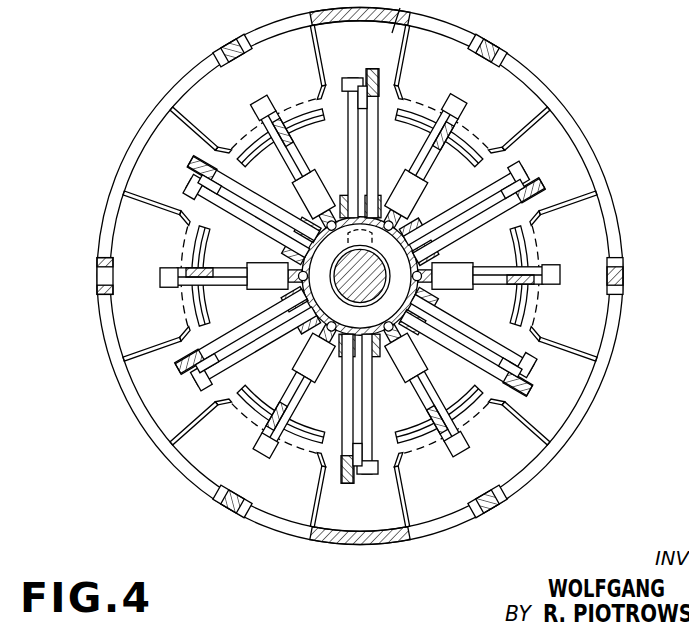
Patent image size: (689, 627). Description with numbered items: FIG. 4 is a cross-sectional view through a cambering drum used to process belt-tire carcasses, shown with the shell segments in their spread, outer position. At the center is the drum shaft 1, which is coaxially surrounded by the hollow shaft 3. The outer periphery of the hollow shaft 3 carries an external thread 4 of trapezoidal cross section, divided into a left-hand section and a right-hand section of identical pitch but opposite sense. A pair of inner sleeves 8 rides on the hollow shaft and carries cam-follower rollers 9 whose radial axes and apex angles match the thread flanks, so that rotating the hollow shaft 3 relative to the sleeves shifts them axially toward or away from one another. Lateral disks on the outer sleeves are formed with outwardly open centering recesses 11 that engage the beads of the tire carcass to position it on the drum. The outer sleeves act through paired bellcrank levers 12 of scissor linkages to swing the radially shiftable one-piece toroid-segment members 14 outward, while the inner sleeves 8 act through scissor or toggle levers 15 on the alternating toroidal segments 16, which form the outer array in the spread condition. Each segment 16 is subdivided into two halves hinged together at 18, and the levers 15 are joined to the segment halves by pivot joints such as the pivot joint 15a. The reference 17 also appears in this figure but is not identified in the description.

The drum shaft 1 is at (373, 284).
The hollow shaft 3 is at (352, 335).
The external thread 4 is at (373, 320).
The inner sleeves 8 is at (428, 288).
The cam-follower rollers 9 is at (376, 190).
The centering recesses 11 is at (538, 320).
The bellcrank levers 12 is at (370, 150).
The one-piece members 14 is at (543, 133).
The scissor or toggle levers 15 is at (487, 304).
The pivot joint 15a is at (432, 281).
The toroidal segments 16 is at (593, 228).
The spacer block 17 is at (623, 273).
The hinge 18 is at (193, 288).